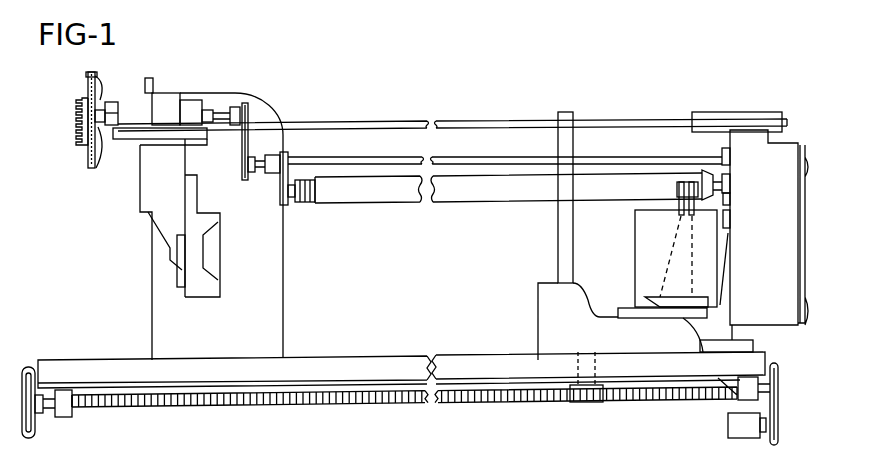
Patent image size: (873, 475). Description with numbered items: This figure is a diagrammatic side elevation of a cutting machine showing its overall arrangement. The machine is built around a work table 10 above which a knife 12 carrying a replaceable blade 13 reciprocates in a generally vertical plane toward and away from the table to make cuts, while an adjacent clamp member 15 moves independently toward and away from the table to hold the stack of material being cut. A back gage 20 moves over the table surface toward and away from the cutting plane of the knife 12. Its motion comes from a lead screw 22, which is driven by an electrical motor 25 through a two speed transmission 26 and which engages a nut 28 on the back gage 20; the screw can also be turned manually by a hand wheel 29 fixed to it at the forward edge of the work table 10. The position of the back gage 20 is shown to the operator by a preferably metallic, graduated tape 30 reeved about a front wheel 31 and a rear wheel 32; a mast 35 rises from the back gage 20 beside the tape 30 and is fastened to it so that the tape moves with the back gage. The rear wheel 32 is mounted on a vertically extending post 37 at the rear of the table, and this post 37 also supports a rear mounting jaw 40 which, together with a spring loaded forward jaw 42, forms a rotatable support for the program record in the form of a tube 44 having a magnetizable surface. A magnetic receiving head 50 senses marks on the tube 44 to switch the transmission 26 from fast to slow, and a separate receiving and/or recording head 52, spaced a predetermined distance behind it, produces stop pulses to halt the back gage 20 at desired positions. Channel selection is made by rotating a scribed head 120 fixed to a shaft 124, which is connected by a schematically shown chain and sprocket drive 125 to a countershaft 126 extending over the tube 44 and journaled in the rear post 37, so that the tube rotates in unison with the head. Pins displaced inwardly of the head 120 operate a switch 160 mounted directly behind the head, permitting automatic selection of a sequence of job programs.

The work table 10 is at (102, 366).
The knife 12 is at (148, 212).
The replaceable blade 13 is at (182, 275).
The clamp member 15 is at (198, 290).
The back gage 20 is at (543, 316).
The lead screw 22 is at (435, 403).
The electrical motor 25 is at (741, 430).
The two speed transmission 26 is at (787, 427).
The nut 28 is at (585, 397).
The hand wheel 29 is at (34, 428).
The tape 30 is at (437, 121).
The front wheel 31 is at (128, 140).
The rear wheel 32 is at (746, 112).
The mast 35 is at (562, 246).
The post 37 is at (753, 333).
The rear mounting jaw 40 is at (730, 185).
The spring loaded forward jaw 42 is at (311, 204).
The tube 44 is at (444, 213).
The magnetic receiving head 50 is at (677, 187).
The magnetic receiving and/or recording head 52 is at (703, 180).
The scribed head 120 is at (79, 153).
The shaft 124 is at (141, 113).
The chain and sprocket drive 125 is at (253, 109).
The countershaft 126 is at (437, 157).
The switch 160 is at (113, 101).